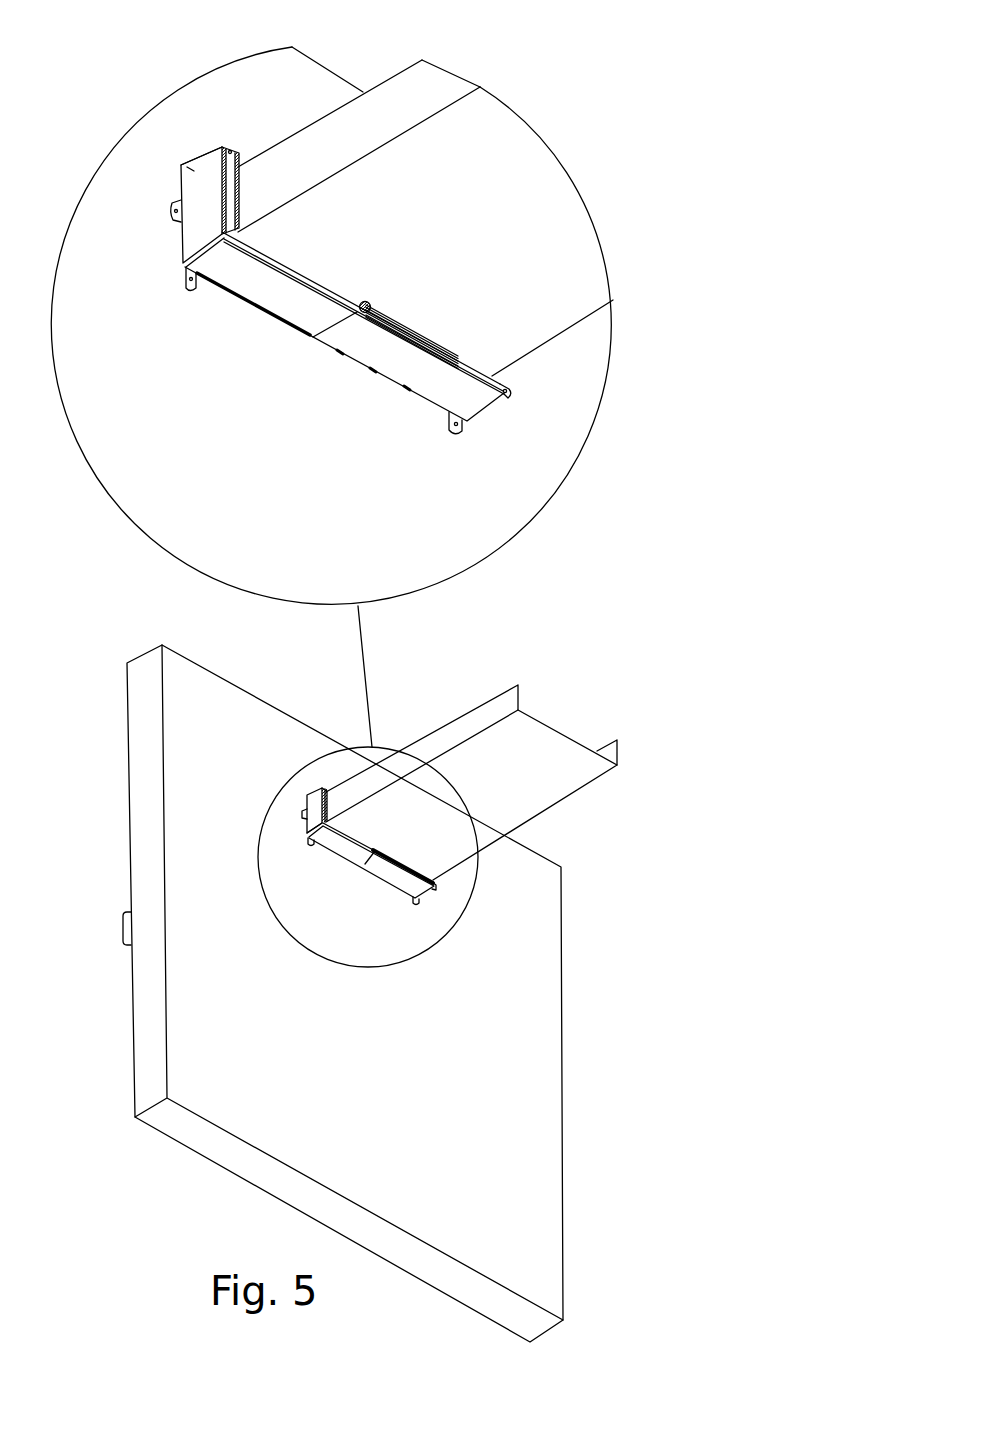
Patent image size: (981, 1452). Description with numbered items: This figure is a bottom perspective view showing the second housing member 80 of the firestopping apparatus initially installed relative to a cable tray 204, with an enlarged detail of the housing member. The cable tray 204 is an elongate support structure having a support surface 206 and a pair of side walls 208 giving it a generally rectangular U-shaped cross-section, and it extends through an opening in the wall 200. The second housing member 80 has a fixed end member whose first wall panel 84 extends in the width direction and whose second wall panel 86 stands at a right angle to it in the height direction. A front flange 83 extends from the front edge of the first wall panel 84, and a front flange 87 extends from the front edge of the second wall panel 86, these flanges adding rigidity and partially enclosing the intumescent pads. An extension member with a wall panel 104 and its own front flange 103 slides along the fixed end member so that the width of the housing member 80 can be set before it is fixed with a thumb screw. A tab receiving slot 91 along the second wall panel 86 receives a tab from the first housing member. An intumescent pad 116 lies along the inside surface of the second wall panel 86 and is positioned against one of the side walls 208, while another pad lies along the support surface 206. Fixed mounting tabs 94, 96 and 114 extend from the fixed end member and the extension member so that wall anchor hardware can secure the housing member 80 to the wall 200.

The second housing member 80 is at (437, 904).
The front flange 83 is at (320, 283).
The first wall panel 84 is at (273, 297).
The second wall panel 86 is at (192, 233).
The front flange 87 is at (227, 165).
The tab receiving slot 91 is at (190, 165).
The fixed mounting tab 94 is at (190, 290).
The fixed mounting tab 96 is at (167, 212).
The front flange 103 is at (503, 400).
The wall panel 104 is at (432, 397).
The fixed mounting tab 114 is at (457, 438).
The intumescent firestopping material pad 116 is at (240, 160).
The wall 200 is at (540, 497).
The cable tray 204 is at (461, 453).
The support surface 206 is at (583, 302).
The side walls 208 is at (432, 85).